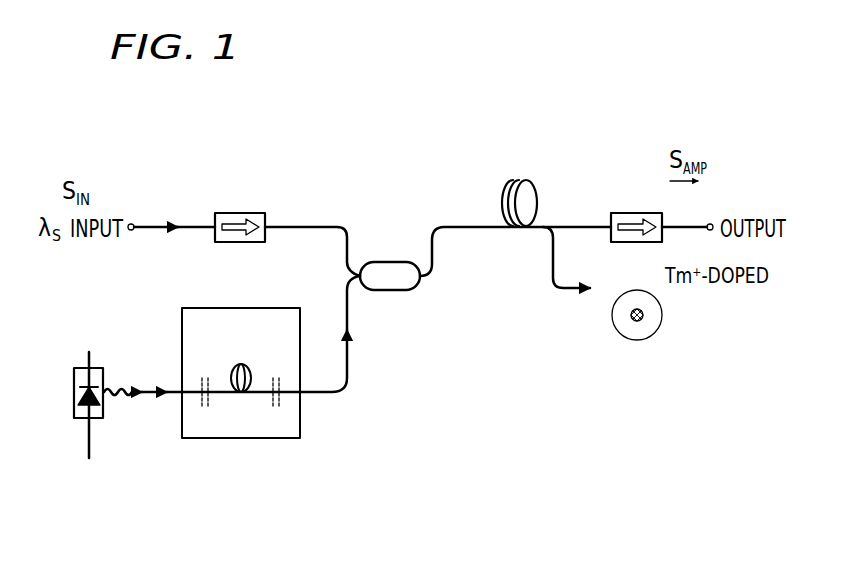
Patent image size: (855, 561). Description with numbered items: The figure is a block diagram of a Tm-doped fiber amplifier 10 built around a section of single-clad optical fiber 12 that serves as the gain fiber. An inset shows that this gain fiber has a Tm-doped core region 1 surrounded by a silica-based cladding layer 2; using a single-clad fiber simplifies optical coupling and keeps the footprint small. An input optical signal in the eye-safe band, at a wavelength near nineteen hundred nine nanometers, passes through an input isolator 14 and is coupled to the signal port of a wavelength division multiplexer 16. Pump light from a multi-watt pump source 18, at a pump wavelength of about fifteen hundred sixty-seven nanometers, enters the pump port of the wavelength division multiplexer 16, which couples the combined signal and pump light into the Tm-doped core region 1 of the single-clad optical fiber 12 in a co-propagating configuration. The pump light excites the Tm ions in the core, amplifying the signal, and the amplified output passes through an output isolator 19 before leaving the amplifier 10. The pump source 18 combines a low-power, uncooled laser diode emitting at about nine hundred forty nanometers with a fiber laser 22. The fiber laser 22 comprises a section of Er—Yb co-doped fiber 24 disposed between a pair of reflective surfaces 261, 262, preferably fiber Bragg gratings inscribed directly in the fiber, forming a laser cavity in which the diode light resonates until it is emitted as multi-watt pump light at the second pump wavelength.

The Tm-doped fiber amplifier 10 is at (696, 96).
The single-clad optical fiber 12 is at (521, 181).
The input isolator 14 is at (241, 213).
The wavelength division multiplexer 16 is at (391, 262).
The output isolator 19 is at (638, 213).
The Tm-doped core region 1 is at (643, 313).
The silica-based cladding layer 2 is at (626, 328).
The pump source 18 is at (343, 477).
The fiber laser 22 is at (238, 438).
The Er—Yb co-doped fiber 24 is at (241, 366).
The first reflective surface 261 is at (205, 378).
The second reflective surface 262 is at (276, 378).